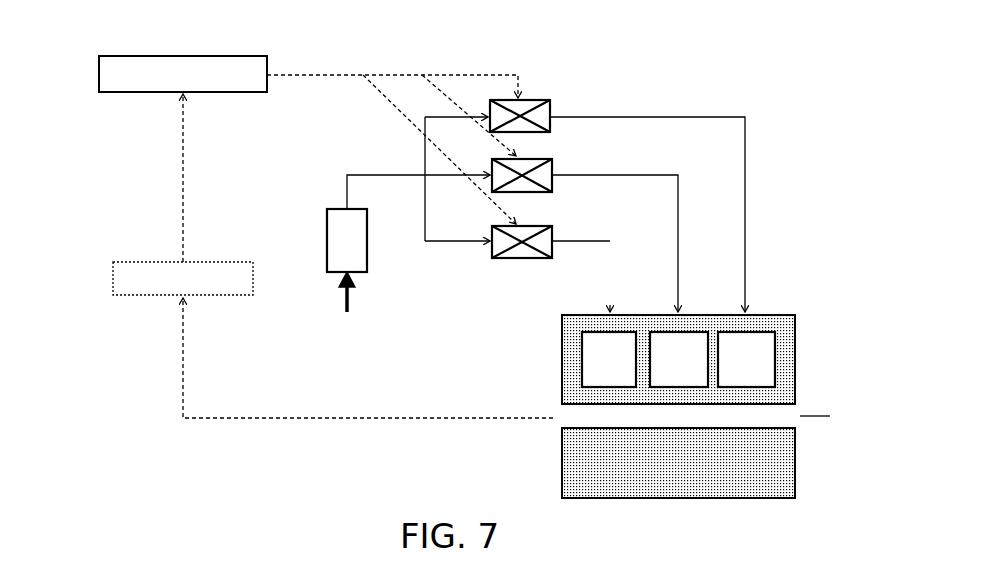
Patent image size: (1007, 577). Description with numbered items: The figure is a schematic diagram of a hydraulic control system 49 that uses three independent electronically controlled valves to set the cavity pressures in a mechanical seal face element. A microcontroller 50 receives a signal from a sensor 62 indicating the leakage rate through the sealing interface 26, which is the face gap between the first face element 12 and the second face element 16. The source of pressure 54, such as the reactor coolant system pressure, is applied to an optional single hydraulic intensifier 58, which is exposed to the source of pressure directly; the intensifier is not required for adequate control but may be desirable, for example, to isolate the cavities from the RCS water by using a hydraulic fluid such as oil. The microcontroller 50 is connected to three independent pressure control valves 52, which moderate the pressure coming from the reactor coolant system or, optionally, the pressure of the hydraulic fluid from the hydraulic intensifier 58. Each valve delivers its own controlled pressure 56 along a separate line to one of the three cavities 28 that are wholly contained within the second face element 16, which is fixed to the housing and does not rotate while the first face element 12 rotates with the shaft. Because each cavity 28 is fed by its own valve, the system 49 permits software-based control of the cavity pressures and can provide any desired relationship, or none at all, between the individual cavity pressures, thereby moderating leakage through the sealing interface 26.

The system 49 is at (632, 65).
The microcontroller 50 is at (268, 58).
The pressure control valves 52 is at (519, 262).
The source of pressure 54 is at (346, 334).
The controlled pressure 56 is at (712, 115).
The hydraulic intensifier 58 is at (333, 248).
The sensor 62 is at (138, 297).
The second face element 16 is at (795, 360).
The cavities 28 is at (598, 368).
The sealing interface 26 is at (806, 415).
The first face element 12 is at (795, 468).